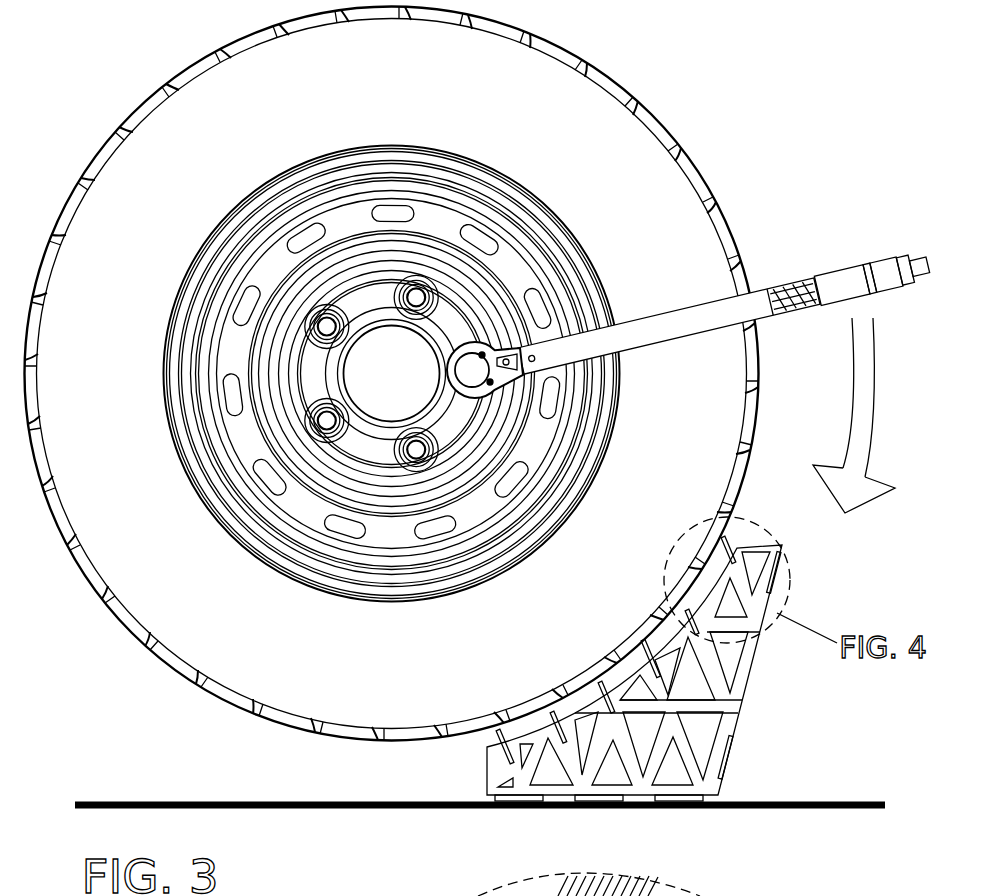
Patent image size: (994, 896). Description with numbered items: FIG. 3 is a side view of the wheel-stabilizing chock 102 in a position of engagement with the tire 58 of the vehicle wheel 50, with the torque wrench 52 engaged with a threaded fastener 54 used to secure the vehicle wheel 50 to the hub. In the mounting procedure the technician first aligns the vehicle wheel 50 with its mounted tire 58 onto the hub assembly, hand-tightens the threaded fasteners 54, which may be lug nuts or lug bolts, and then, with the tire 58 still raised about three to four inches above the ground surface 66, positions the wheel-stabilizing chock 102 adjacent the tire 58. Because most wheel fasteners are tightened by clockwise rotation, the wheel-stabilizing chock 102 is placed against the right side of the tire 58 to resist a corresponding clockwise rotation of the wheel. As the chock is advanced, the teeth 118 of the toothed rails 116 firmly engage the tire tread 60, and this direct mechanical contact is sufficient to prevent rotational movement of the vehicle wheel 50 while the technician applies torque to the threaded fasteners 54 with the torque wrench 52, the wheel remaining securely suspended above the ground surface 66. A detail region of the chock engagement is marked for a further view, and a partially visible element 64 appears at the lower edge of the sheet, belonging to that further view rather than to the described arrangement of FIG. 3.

In FIG. 3, the vehicle wheel 50 is at (438, 374).
In FIG. 3, the torque wrench 52 is at (772, 292).
In FIG. 3, the threaded fastener 54 is at (410, 466).
In FIG. 3, the tire 58 is at (438, 374).
In FIG. 3, the tire tread 60 is at (717, 197).
In FIG. 3, the ground surface 66 is at (140, 802).
In FIG. 3, the wheel-stabilizing chock 102 is at (674, 647).
In FIG. 3, the toothed rails 116 is at (703, 633).
In FIG. 3, the teeth 118 is at (727, 540).
In FIG. 4, the tire portion 64 is at (536, 884).